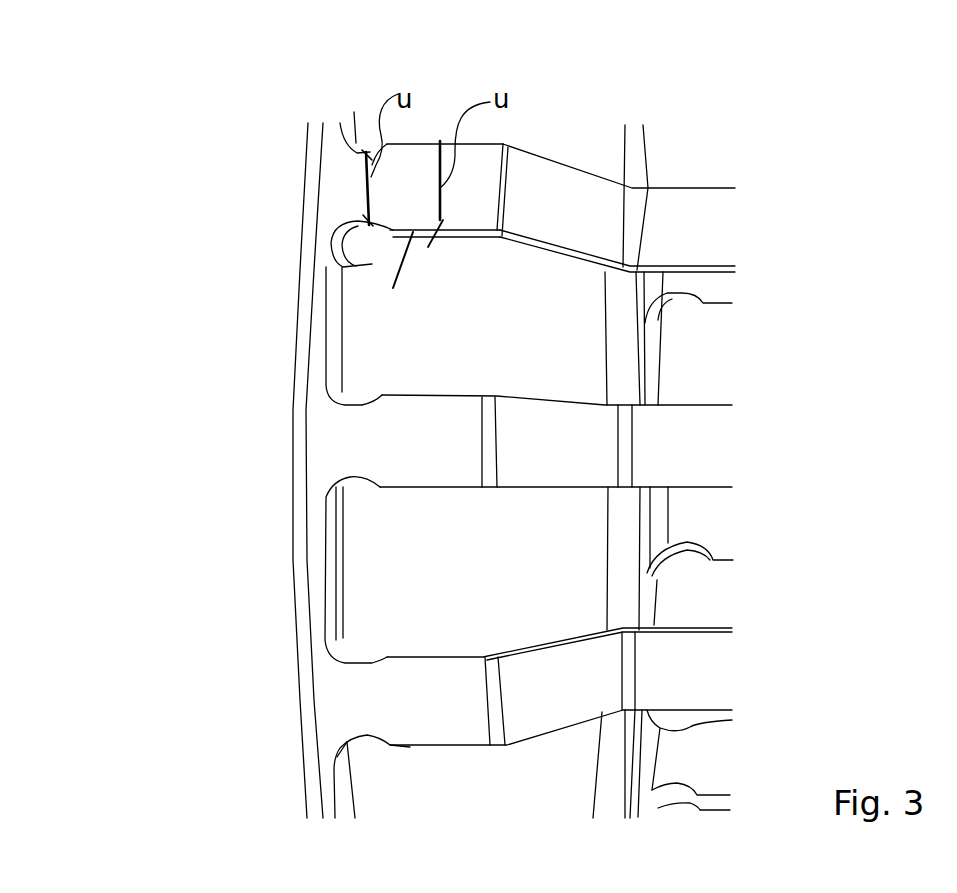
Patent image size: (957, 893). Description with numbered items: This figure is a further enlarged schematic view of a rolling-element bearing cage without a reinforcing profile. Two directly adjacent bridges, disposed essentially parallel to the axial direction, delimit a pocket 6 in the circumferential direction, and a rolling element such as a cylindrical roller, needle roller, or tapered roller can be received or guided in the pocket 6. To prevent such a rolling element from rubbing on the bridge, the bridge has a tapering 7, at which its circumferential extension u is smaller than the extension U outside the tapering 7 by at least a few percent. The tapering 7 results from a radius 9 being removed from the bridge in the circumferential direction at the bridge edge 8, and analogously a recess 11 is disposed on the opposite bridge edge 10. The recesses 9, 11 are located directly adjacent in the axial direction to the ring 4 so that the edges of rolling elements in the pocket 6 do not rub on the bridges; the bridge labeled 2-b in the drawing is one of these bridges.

The ring 4 is at (308, 308).
The radius 9 is at (328, 272).
The tapering 7 is at (368, 190).
The recess 11 is at (372, 150).
The bridge edge 10 is at (412, 145).
The bridge edge 8 is at (393, 288).
The pocket 6 is at (483, 347).
The column member 2-b is at (682, 230).